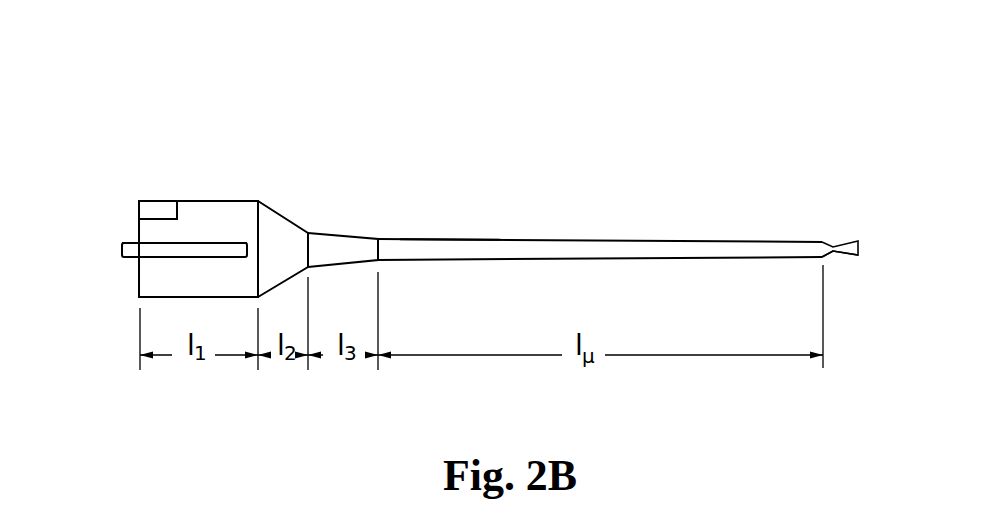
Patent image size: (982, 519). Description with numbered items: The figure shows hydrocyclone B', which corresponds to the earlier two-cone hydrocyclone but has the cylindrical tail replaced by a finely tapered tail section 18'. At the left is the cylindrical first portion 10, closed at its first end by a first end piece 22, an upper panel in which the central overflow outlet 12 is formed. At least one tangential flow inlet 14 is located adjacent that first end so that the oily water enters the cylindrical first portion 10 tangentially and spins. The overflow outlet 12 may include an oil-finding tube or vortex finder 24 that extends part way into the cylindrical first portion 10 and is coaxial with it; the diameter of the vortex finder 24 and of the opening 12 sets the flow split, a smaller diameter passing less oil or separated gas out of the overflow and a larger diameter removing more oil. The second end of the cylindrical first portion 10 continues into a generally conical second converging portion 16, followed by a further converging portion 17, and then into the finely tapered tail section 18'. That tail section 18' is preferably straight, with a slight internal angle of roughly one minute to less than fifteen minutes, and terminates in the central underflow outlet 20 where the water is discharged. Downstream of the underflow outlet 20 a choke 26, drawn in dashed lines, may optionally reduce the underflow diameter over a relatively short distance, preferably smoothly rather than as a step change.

The cylindrical first portion 10 is at (200, 201).
The central overflow outlet 12 is at (120, 250).
The tangential flow inlet 14 is at (164, 210).
The second converging portion 16 is at (287, 212).
The converging portion 17 is at (342, 235).
The finely tapered tail section 18' is at (600, 201).
The central underflow outlet 20 is at (840, 243).
The first end piece 22 is at (138, 230).
The vortex finder 24 is at (203, 248).
The choke 26 is at (845, 252).
The hydrocyclone B' is at (472, 154).